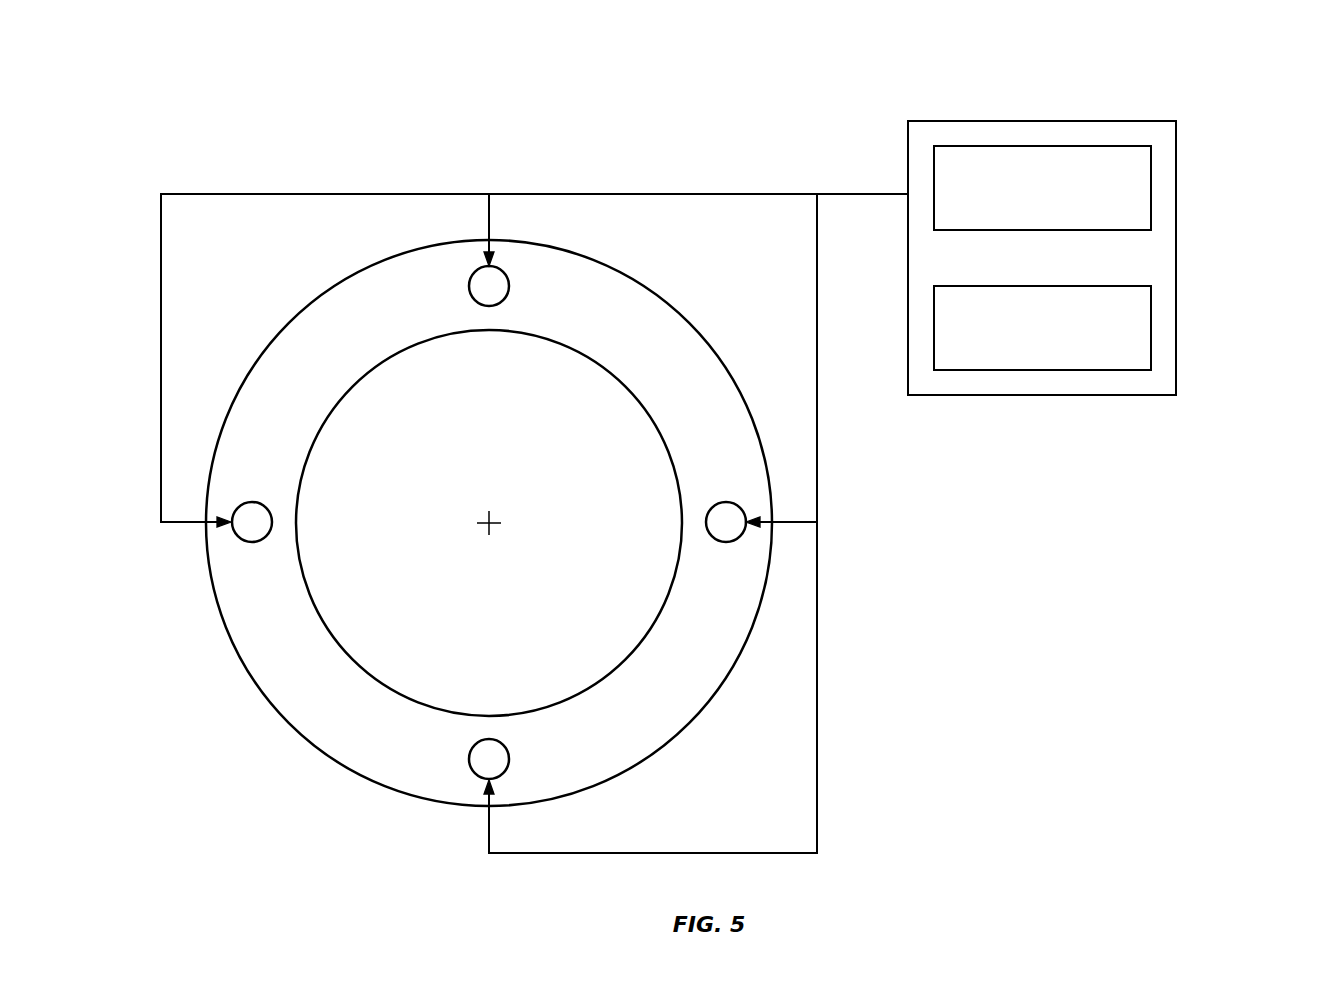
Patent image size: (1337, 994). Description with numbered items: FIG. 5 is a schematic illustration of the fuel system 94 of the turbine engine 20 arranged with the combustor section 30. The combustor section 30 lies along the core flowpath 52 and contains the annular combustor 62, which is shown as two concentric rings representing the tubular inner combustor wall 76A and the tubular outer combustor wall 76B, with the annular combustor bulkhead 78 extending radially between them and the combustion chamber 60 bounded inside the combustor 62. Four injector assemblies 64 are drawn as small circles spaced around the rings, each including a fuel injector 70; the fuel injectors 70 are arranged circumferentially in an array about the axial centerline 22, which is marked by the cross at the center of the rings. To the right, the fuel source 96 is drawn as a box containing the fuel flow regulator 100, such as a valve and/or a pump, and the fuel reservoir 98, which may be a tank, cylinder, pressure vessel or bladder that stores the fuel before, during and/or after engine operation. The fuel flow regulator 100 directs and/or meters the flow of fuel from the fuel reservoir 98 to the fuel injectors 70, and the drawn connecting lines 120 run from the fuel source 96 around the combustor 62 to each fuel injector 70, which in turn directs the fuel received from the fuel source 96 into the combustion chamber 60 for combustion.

The turbine engine 20 is at (240, 100).
The axial centerline 22 is at (489, 530).
The combustor section 30 is at (633, 226).
The core flowpath 52 is at (734, 438).
The combustion chamber 60 is at (502, 520).
The combustor 62 is at (684, 293).
The injector assembly 64 is at (489, 522).
The fuel injector 70 is at (489, 306).
The inner combustor wall 76A is at (638, 405).
The outer combustor wall 76B is at (722, 362).
The combustor bulkhead 78 is at (618, 350).
The fuel system 94 is at (1133, 93).
The fuel source 96 is at (1176, 155).
The fuel reservoir 98 is at (1057, 360).
The fuel flow regulator 100 is at (1021, 220).
The fluid lines 120 is at (799, 182).